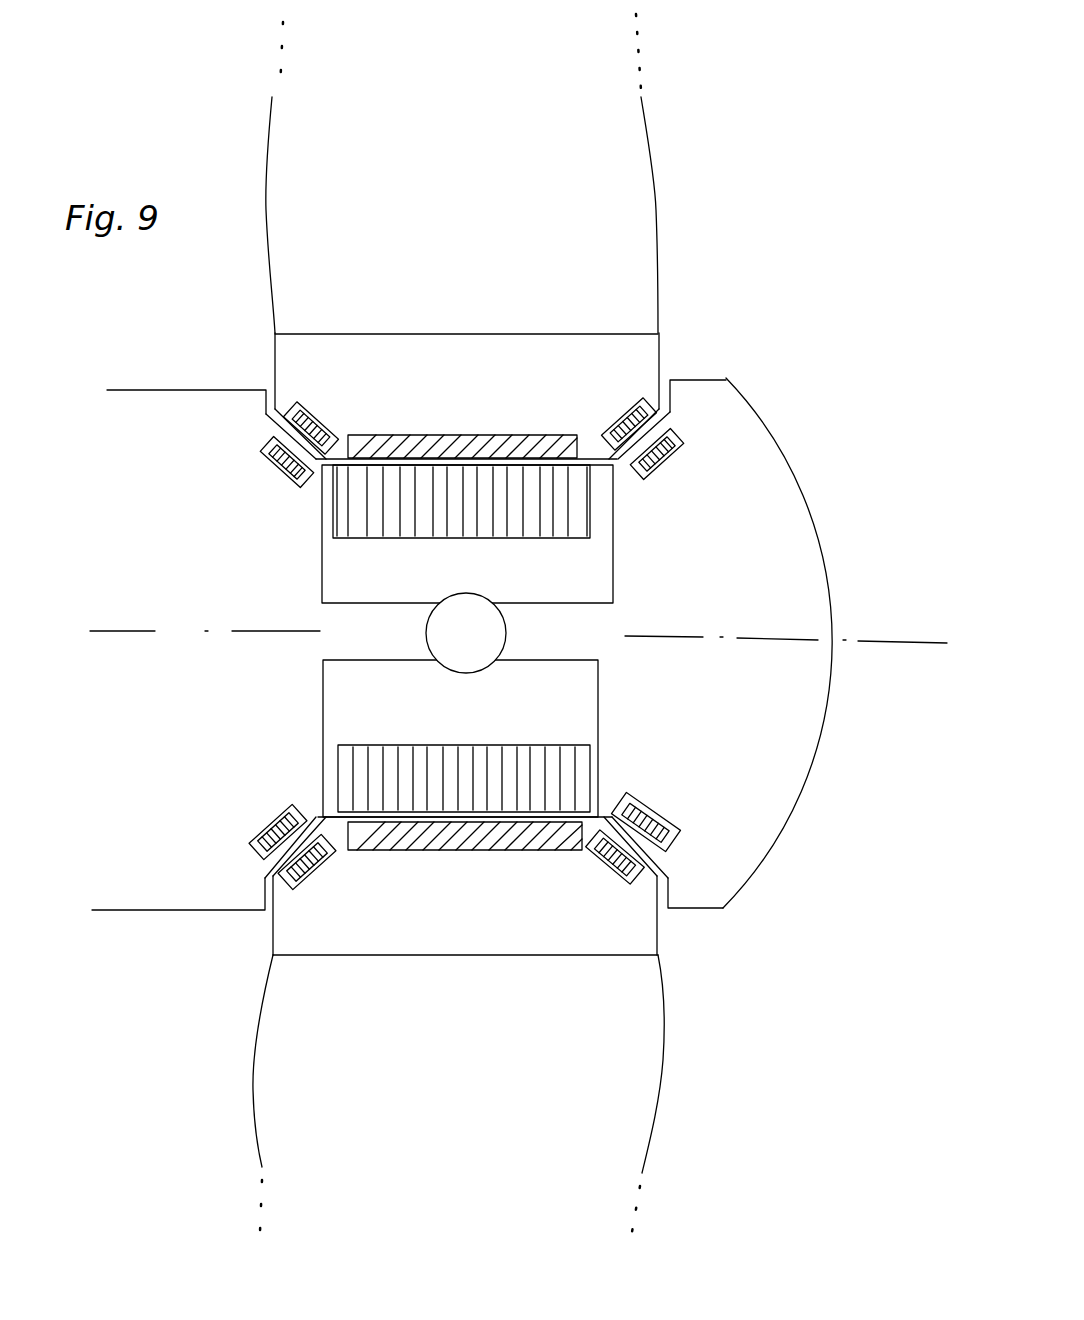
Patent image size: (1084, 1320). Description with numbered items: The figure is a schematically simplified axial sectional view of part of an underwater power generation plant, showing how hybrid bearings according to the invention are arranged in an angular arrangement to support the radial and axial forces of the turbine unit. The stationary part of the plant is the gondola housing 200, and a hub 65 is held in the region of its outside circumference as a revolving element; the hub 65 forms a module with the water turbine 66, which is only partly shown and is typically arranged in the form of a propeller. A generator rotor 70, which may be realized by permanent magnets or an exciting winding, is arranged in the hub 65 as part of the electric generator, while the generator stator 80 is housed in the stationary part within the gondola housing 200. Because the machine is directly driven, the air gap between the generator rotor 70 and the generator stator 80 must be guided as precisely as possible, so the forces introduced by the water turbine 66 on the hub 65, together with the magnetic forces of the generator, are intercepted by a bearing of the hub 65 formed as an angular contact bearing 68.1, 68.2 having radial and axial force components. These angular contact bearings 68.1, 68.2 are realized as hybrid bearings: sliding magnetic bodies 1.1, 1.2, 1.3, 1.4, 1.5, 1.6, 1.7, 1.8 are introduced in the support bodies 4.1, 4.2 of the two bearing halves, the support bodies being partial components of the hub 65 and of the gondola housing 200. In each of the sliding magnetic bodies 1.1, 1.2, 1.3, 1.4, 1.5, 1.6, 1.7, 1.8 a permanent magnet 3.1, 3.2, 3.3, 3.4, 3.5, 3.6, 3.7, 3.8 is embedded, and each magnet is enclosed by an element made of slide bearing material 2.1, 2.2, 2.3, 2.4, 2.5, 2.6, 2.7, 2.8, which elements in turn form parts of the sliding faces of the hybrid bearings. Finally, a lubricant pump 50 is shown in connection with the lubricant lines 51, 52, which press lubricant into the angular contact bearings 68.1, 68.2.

The water turbine 66 is at (482, 248).
The hub 65 is at (655, 338).
The angular contact bearing 68.1 is at (742, 430).
The angular contact bearing 68.2 is at (255, 437).
The support body 4.1 is at (400, 414).
The support body 4.2 is at (310, 528).
The gondola housing 200 is at (766, 643).
The lubricant line 51 is at (612, 567).
The lubricant line 52 is at (598, 700).
The generator stator 80 is at (582, 510).
The generator rotor 70 is at (534, 445).
The lubricant pump 50 is at (507, 628).
The sliding magnetic body 1.1 is at (678, 440).
The sliding magnetic body 1.2 is at (640, 400).
The sliding magnetic body 1.3 is at (289, 405).
The sliding magnetic body 1.4 is at (266, 443).
The sliding magnetic body 1.5 is at (285, 805).
The sliding magnetic body 1.6 is at (320, 888).
The sliding magnetic body 1.7 is at (636, 880).
The sliding magnetic body 1.8 is at (668, 842).
The element made of slide bearing material 2.1 is at (648, 482).
The element made of slide bearing material 2.2 is at (640, 407).
The element made of slide bearing material 2.3 is at (291, 400).
The element made of slide bearing material 2.4 is at (270, 464).
The element made of slide bearing material 2.5 is at (252, 851).
The element made of slide bearing material 2.6 is at (281, 882).
The element made of slide bearing material 2.7 is at (632, 877).
The element made of slide bearing material 2.8 is at (668, 882).
The permanent magnet 3.1 is at (663, 464).
The permanent magnet 3.2 is at (611, 409).
The permanent magnet 3.3 is at (306, 404).
The permanent magnet 3.4 is at (271, 476).
The permanent magnet 3.5 is at (254, 834).
The permanent magnet 3.6 is at (322, 877).
The permanent magnet 3.7 is at (616, 894).
The permanent magnet 3.8 is at (653, 807).